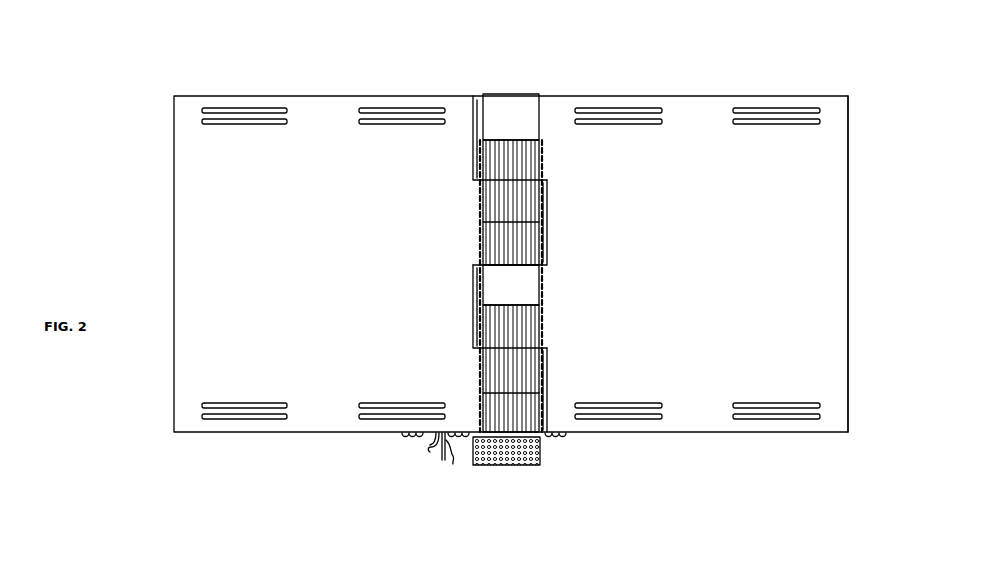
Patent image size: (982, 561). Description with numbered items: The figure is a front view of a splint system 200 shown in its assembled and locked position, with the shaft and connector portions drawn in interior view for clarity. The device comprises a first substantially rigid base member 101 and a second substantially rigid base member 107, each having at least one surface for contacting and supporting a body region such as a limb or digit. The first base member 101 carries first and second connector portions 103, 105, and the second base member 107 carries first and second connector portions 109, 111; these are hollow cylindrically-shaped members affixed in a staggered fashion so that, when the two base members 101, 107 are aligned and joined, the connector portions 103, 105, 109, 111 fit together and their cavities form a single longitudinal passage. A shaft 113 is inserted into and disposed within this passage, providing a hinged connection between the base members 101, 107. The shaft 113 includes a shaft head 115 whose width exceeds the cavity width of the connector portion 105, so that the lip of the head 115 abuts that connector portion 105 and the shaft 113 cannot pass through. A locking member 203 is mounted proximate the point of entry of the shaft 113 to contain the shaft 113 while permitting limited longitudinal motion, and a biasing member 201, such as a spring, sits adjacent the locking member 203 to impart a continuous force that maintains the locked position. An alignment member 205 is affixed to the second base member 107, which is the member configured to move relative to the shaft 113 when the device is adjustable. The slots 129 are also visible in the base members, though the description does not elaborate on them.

The first substantially rigid base member 101 is at (174, 262).
The first connector portion 103 is at (548, 210).
The second connector portion 105 is at (547, 368).
The second substantially rigid base member 107 is at (848, 265).
The first connector portion 109 is at (476, 110).
The second connector portion 111 is at (478, 270).
The shaft 113 is at (517, 106).
The shaft head 115 is at (517, 467).
The ventilation slots 129 is at (247, 110).
The splint system 200 is at (144, 351).
The biasing member 201 is at (430, 459).
The locking member 203 is at (457, 460).
The alignment member 205 is at (570, 434).